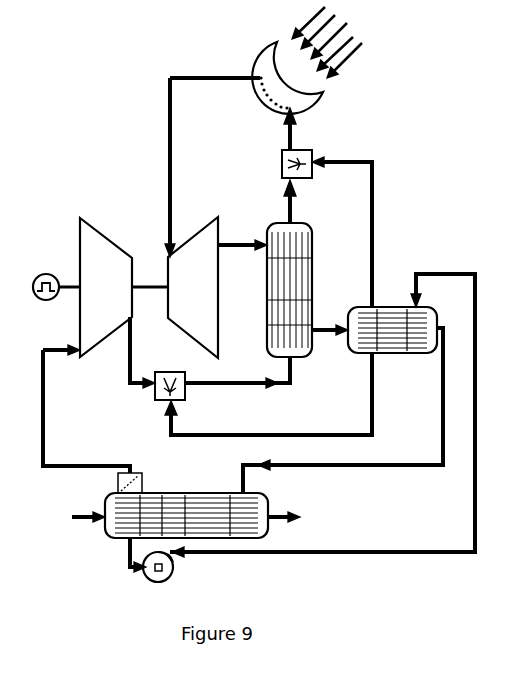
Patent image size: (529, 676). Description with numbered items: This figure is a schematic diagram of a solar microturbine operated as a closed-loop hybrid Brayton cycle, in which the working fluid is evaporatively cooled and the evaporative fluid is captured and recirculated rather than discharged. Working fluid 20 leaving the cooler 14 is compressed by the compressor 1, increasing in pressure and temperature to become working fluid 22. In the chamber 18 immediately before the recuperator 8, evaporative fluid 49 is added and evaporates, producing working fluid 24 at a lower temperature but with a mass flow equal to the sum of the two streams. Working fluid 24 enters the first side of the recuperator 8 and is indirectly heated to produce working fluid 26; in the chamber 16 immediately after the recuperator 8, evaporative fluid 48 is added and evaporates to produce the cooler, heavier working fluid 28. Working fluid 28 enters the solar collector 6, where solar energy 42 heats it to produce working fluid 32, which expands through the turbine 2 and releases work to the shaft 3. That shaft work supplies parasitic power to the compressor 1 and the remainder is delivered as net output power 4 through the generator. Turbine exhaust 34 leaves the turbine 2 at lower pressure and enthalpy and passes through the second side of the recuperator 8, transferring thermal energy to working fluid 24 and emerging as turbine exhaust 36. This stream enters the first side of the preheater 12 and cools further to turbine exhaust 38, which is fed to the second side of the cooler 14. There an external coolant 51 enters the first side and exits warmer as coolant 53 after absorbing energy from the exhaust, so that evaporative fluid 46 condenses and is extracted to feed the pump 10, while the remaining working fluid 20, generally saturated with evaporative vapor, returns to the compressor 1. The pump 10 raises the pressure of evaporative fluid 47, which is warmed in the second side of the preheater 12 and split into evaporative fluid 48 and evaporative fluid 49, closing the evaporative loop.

The compressor 1 is at (106, 287).
The turbine 2 is at (193, 287).
The shaft 3 is at (113, 287).
The net output power 4 is at (48, 266).
The solar collector 6 is at (287, 78).
The recuperator 8 is at (289, 290).
The pump 10 is at (172, 584).
The preheater 12 is at (392, 330).
The cooler 14 is at (186, 505).
The chamber 16 is at (324, 130).
The chamber 18 is at (148, 406).
The working fluid 20 is at (81, 409).
The working fluid 22 is at (142, 352).
The working fluid 24 is at (237, 375).
The working fluid 26 is at (281, 200).
The working fluid 28 is at (281, 135).
The working fluid 32 is at (212, 167).
The turbine exhaust 34 is at (242, 240).
The turbine exhaust 36 is at (330, 321).
The turbine exhaust 38 is at (347, 410).
The solar energy 42 is at (327, 42).
The evaporative fluid 46 is at (129, 555).
The evaporative fluid 47 is at (322, 409).
The evaporative fluid 48 is at (342, 229).
The evaporative fluid 49 is at (268, 396).
The external coolant 51 is at (77, 518).
The coolant 53 is at (295, 518).